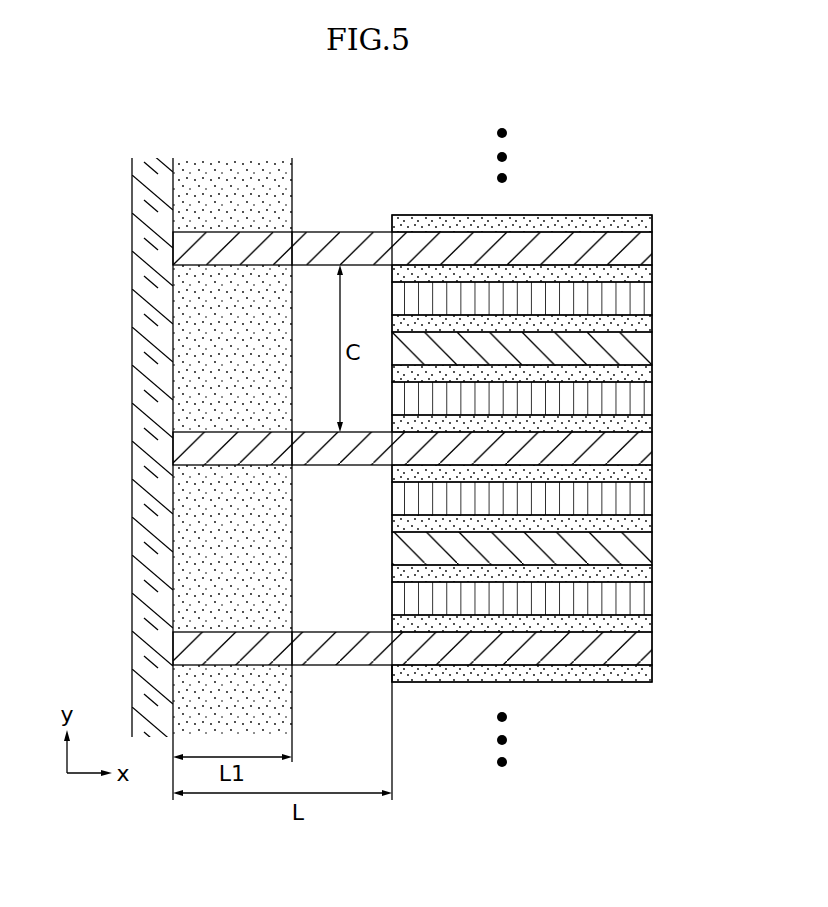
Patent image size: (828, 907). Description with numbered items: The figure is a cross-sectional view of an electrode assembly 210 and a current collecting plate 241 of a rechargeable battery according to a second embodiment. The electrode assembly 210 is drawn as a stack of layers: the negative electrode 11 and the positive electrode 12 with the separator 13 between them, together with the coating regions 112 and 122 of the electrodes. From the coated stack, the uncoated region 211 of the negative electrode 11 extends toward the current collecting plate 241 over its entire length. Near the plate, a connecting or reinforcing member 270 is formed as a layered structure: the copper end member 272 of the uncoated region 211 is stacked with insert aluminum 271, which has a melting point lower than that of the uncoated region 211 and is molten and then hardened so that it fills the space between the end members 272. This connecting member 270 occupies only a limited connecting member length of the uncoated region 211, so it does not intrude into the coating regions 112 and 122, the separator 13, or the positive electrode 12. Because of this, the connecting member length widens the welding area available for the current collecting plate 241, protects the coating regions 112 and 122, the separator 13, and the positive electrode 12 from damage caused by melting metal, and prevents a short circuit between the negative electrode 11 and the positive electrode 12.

The negative electrode 11 is at (620, 248).
The coating region 112 is at (458, 276).
The positive electrode 12 is at (635, 345).
The coating region 122 is at (520, 372).
The separator 13 is at (635, 298).
The electrode assembly 210 is at (460, 800).
The uncoated region 211 is at (347, 245).
The current collecting plate 241 is at (148, 345).
The connecting member 270 is at (185, 103).
The insert aluminum 271 is at (203, 283).
The end member 272 is at (257, 248).